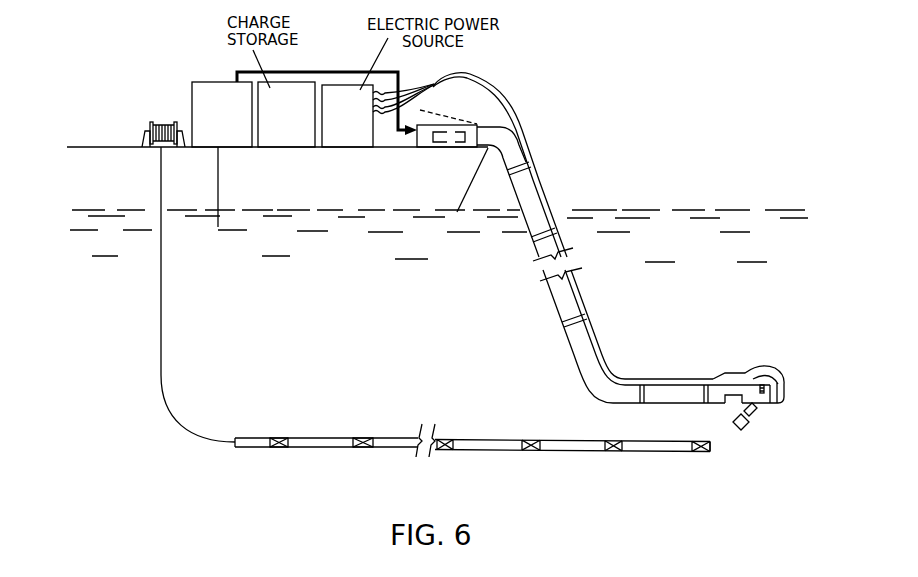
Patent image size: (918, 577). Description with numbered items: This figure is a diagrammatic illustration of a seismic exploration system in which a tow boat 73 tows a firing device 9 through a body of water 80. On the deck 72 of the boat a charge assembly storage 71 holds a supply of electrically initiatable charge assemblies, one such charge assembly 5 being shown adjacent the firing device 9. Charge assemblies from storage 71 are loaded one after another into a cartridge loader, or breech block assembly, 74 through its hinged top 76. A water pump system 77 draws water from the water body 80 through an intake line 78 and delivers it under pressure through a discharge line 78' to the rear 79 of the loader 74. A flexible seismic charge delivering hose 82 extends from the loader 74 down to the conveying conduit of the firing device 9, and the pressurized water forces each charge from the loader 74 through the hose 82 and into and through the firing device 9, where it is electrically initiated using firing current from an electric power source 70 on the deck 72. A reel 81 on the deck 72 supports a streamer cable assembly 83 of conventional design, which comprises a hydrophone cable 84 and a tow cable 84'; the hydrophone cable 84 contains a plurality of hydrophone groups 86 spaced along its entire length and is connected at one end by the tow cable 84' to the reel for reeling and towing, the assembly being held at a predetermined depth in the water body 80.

The connector plug 5 is at (751, 420).
The firing device 9 is at (742, 392).
The electric power source 70 is at (362, 112).
The charge assembly storage 71 is at (296, 104).
The deck 72 is at (96, 147).
The tow boat 73 is at (357, 177).
The cartridge loader 74 is at (473, 132).
The hinged top 76 is at (461, 113).
The water pump system 77 is at (221, 100).
The intake line 78 is at (239, 187).
The discharge line 78' is at (327, 91).
The rear of loader 79 is at (418, 124).
The water body 80 is at (368, 304).
The reel 81 is at (152, 128).
The flexible seismic charge delivering hose 82 is at (538, 178).
The streamer cable assembly 83 is at (308, 455).
The hydrophone cable 84 is at (328, 432).
The tow cable 84' is at (198, 294).
The hydrophone groups 86 is at (535, 439).